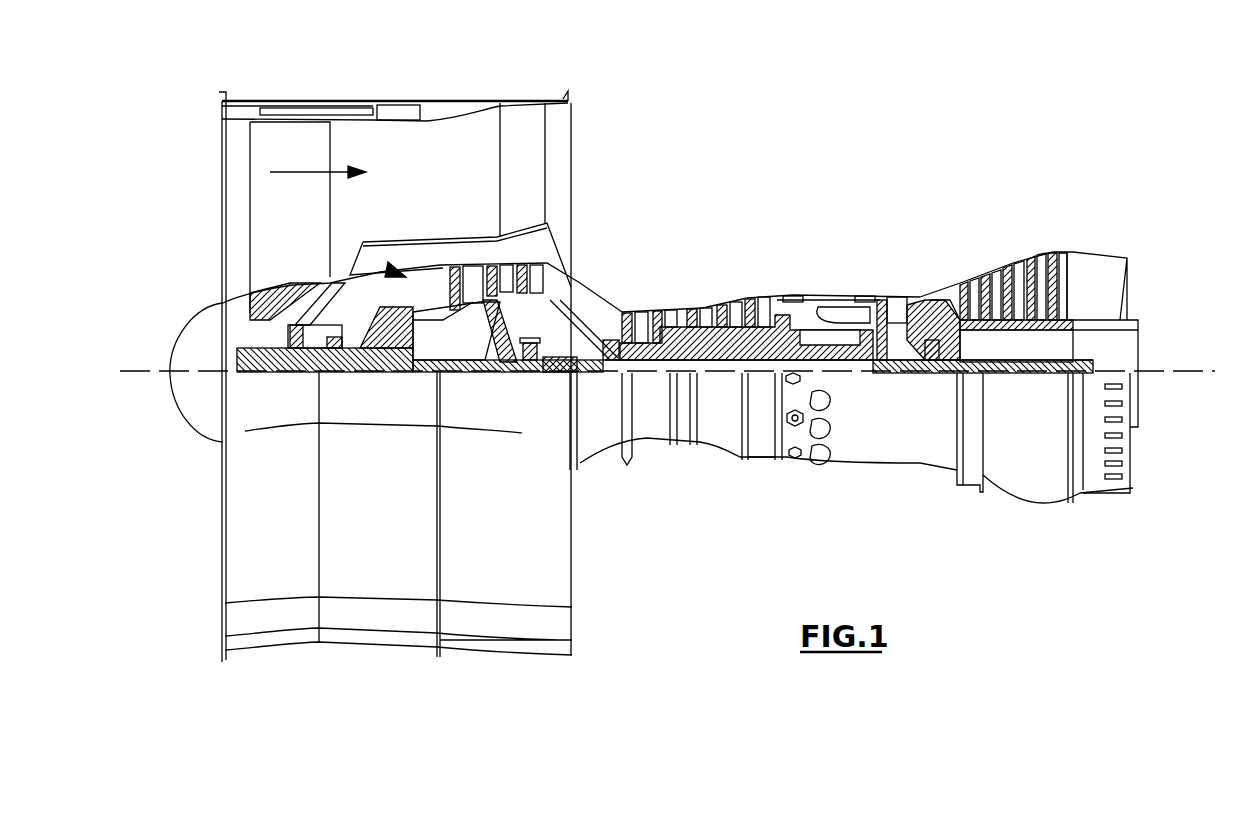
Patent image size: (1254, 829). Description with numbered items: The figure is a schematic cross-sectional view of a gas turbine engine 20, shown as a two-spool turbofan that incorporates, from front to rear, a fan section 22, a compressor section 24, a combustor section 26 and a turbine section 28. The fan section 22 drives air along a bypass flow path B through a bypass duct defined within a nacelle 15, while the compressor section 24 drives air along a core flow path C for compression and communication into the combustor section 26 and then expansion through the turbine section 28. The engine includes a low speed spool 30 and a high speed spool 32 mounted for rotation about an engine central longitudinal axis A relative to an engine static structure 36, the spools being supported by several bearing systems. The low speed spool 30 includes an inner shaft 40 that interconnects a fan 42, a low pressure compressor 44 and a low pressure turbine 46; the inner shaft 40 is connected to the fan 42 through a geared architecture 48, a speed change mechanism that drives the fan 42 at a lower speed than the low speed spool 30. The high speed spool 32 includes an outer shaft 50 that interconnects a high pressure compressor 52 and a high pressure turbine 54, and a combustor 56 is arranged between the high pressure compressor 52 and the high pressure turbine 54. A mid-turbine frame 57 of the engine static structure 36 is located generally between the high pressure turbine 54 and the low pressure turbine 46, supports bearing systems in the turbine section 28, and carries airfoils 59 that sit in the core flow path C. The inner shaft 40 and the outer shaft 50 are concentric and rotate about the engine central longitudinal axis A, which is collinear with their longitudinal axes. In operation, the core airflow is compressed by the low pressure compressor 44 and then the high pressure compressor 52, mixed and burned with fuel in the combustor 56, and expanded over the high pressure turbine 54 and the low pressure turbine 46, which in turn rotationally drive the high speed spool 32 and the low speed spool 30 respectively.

The nacelle 15 is at (398, 104).
The gas turbine engine 20 is at (848, 146).
The fan section 22 is at (330, 84).
The compressor section 24 is at (622, 280).
The combustor section 26 is at (833, 268).
The turbine section 28 is at (976, 230).
The low speed spool 30 is at (723, 385).
The high speed spool 32 is at (757, 340).
The engine static structure 36 is at (760, 468).
The inner shaft 40 is at (590, 373).
The fan 42 is at (305, 224).
The low pressure compressor 44 is at (497, 282).
The low pressure turbine 46 is at (1017, 270).
The geared architecture 48 is at (403, 357).
The outer shaft 50 is at (845, 373).
The high pressure compressor 52 is at (693, 345).
The high pressure turbine 54 is at (893, 295).
The combustor 56 is at (828, 318).
The mid-turbine frame 57 is at (942, 280).
The airfoils 59 is at (952, 338).
The engine central longitudinal axis A is at (1217, 371).
The bypass flow path B is at (306, 172).
The core flow path C is at (395, 272).